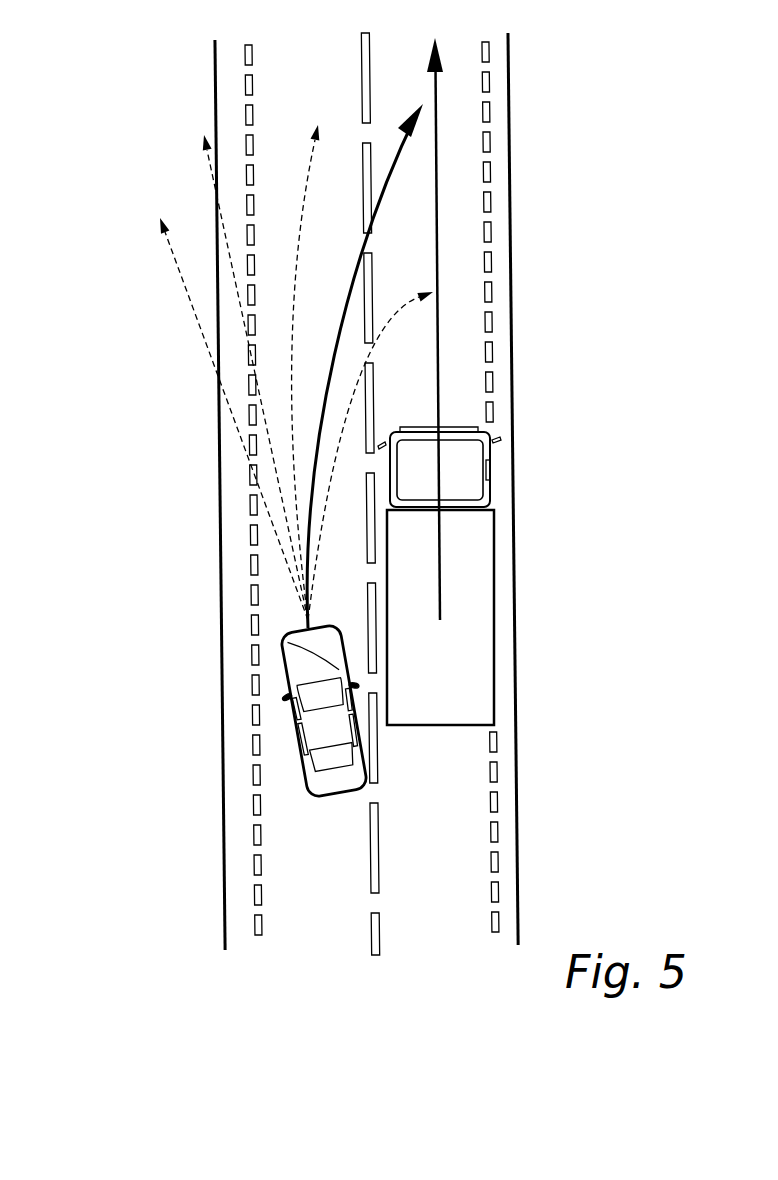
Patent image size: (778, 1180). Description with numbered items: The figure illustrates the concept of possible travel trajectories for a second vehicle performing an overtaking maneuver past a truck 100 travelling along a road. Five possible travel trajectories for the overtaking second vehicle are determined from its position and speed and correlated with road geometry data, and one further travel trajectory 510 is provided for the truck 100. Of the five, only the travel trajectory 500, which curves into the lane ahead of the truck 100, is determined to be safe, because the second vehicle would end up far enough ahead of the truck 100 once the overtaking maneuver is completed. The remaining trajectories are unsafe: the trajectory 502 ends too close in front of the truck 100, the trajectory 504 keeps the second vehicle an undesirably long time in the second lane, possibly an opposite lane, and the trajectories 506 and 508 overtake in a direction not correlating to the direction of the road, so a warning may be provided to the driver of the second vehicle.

The truck 100 is at (463, 667).
The travel trajectory 500 is at (346, 293).
The travel trajectory 502 is at (351, 408).
The travel trajectory 504 is at (308, 146).
The travel trajectory 506 is at (192, 310).
The travel trajectory 508 is at (207, 164).
The travel trajectory 510 is at (441, 546).